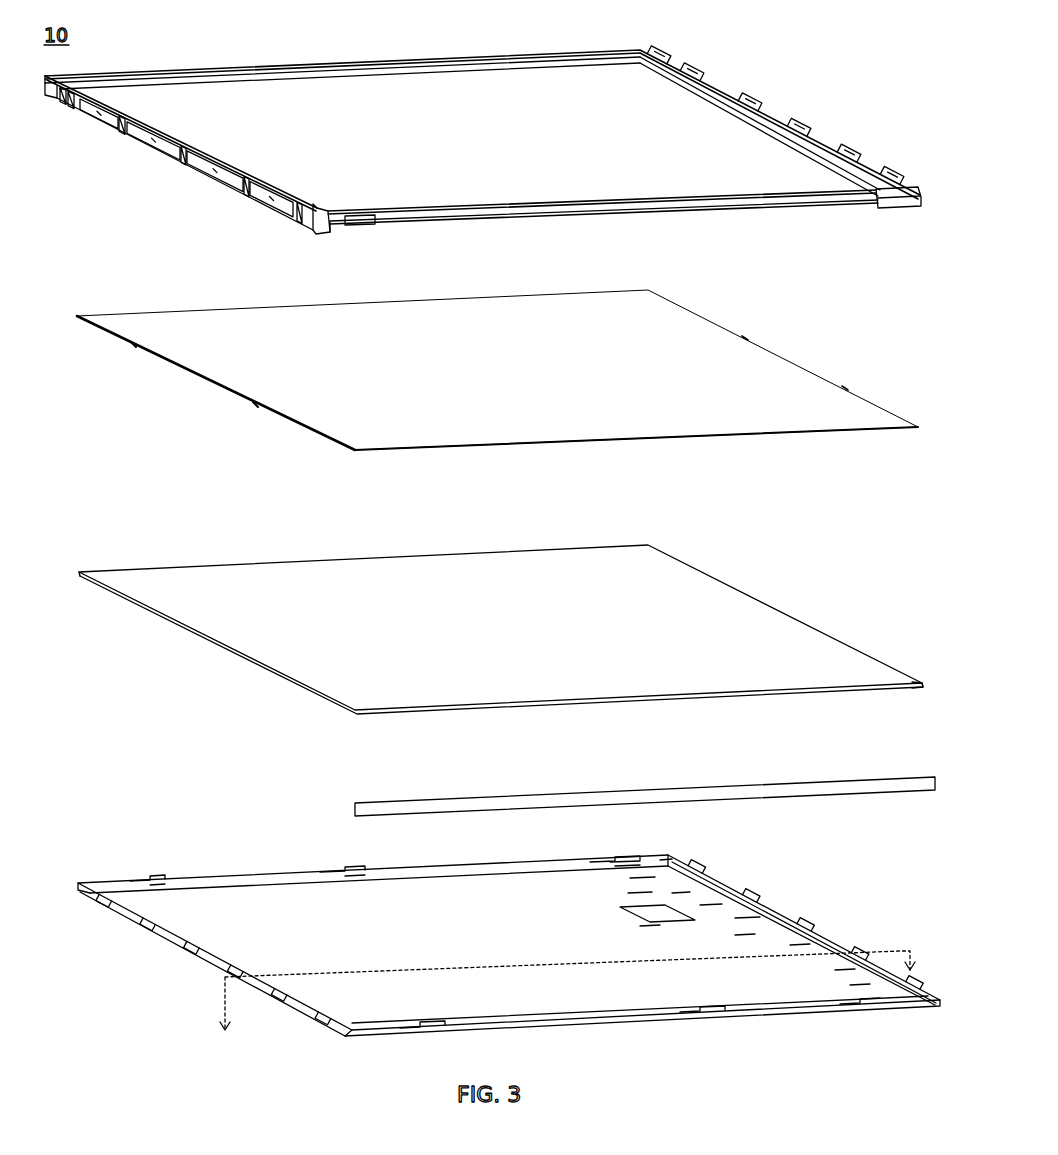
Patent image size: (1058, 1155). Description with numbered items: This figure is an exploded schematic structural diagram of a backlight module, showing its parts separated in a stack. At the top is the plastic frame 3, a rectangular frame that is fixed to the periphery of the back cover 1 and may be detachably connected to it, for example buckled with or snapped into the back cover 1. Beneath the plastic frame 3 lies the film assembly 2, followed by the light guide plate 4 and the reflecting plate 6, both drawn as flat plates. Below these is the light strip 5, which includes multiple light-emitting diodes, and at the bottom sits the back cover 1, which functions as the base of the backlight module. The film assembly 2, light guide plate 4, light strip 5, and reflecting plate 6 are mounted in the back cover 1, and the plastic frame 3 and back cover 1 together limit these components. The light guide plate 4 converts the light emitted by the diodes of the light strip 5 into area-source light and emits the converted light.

The plastic frame 3 is at (755, 105).
The film assembly 2 is at (767, 364).
The light guide plate 4 is at (765, 607).
The reflecting plate 6 is at (925, 686).
The light strip 5 is at (877, 788).
The back cover 1 is at (804, 915).